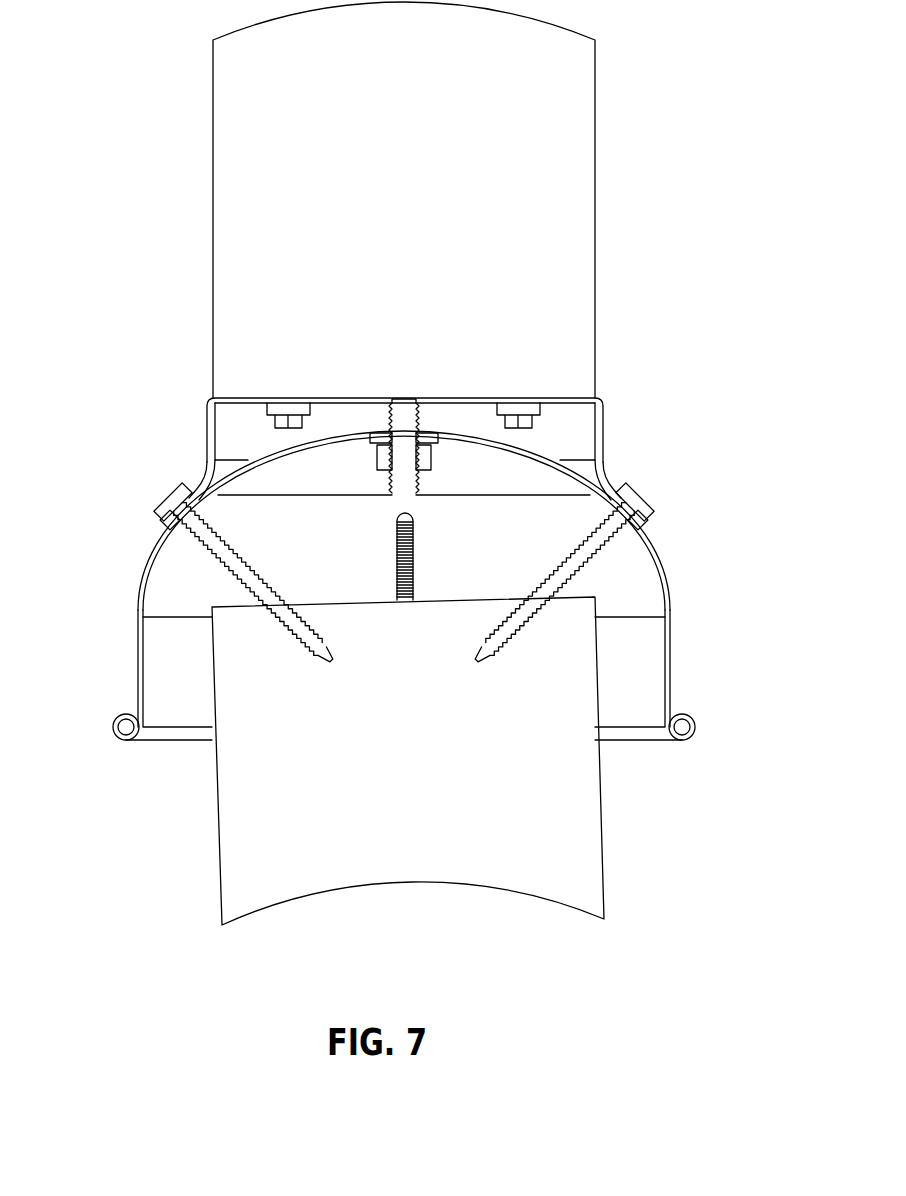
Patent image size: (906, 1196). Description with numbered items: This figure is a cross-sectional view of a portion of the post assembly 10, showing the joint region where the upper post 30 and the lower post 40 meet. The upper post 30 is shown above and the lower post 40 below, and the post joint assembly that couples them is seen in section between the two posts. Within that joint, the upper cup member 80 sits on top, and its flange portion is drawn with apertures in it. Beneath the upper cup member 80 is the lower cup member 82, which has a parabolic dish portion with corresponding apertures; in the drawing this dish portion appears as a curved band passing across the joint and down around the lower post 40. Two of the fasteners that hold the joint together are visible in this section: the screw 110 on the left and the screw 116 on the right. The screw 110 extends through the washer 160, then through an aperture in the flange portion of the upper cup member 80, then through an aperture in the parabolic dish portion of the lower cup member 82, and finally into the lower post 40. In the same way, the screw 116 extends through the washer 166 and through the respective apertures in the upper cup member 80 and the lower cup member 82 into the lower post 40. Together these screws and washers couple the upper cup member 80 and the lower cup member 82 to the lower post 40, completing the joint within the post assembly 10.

The post assembly 10 is at (672, 273).
The upper post 30 is at (596, 202).
The lower post 40 is at (602, 853).
The upper cup member 80 is at (603, 437).
The lower cup member 82 is at (662, 577).
The screw 110 is at (213, 532).
The screw 116 is at (613, 513).
The washer 160 is at (167, 527).
The washer 166 is at (643, 527).